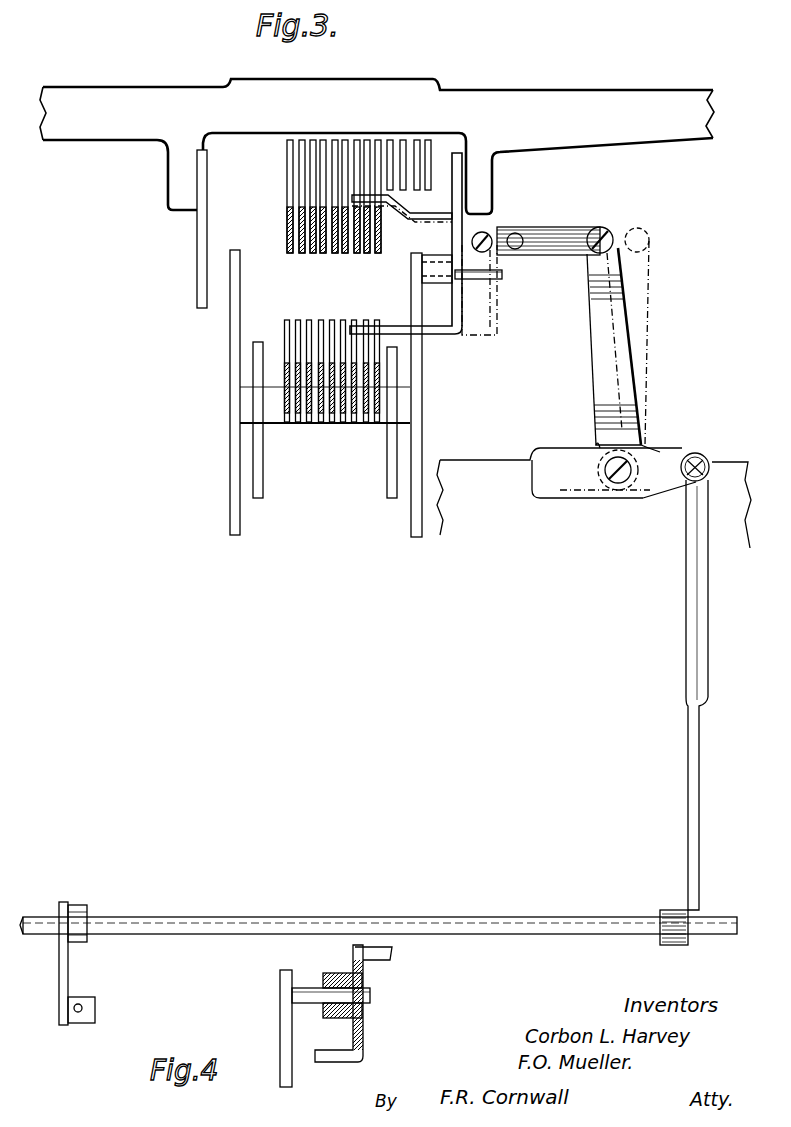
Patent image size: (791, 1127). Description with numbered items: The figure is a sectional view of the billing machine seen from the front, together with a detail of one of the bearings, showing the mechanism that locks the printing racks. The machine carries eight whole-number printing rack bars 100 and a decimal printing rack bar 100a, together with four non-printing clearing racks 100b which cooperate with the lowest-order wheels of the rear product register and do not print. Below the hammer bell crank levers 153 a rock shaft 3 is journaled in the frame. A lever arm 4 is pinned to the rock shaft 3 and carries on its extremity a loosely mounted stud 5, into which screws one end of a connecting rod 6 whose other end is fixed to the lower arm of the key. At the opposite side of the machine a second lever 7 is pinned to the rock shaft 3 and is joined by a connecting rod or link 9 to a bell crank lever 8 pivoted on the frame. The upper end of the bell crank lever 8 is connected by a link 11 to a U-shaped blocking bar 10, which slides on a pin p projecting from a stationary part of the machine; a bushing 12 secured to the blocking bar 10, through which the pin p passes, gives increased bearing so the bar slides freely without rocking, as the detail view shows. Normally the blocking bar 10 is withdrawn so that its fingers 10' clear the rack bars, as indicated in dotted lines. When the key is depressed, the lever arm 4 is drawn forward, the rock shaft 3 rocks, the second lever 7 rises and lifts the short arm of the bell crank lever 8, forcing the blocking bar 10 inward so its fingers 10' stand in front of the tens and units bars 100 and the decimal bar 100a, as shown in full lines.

In FIG. 3, the rock shaft 3 is at (143, 918).
In FIG. 3, the lever arm 4 is at (68, 975).
In FIG. 3, the stud 5 is at (88, 1024).
In FIG. 3, the connecting rod 6 is at (83, 1007).
In FIG. 3, the second lever 7 is at (683, 924).
In FIG. 3, the bell crank lever 8 is at (623, 370).
In FIG. 3, the connecting rod or link 9 is at (690, 570).
In FIG. 3, the U-shaped blocking bar 10 is at (483, 293).
In FIG. 4, the U-shaped blocking bar 10 is at (374, 1004).
In FIG. 3, the fingers 10' is at (402, 261).
In FIG. 3, the link 11 is at (545, 232).
In FIG. 3, the bushing 12 is at (453, 338).
In FIG. 4, the bushing 12 is at (335, 1018).
In FIG. 3, the pin p is at (502, 276).
In FIG. 4, the pin p is at (305, 990).
In FIG. 3, the printing rack bars 100 is at (288, 172).
In FIG. 3, the decimal printing rack bar 100a is at (380, 140).
In FIG. 3, the non-printing clearing racks 100b is at (417, 140).
In FIG. 3, the hammer bell crank levers 153 is at (285, 320).